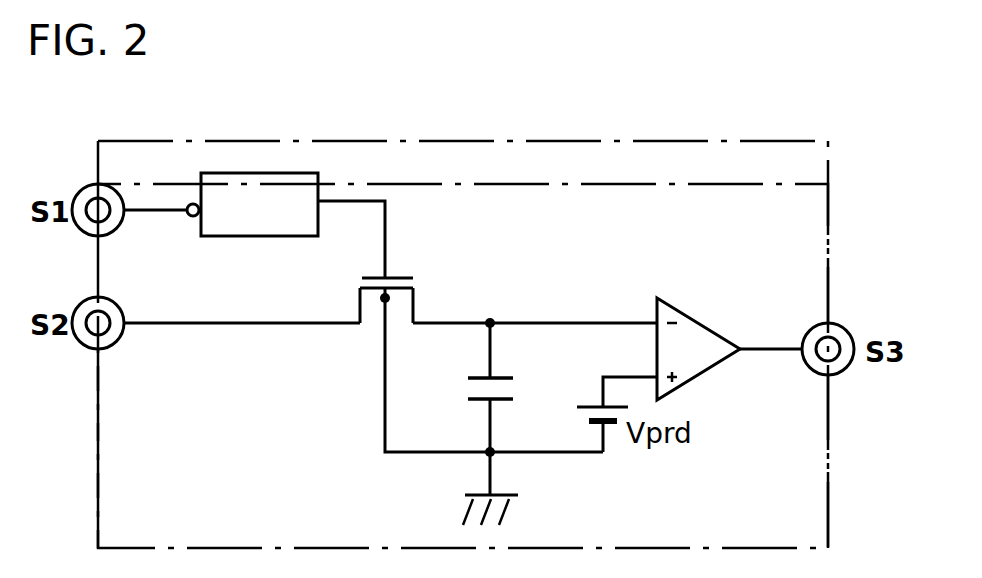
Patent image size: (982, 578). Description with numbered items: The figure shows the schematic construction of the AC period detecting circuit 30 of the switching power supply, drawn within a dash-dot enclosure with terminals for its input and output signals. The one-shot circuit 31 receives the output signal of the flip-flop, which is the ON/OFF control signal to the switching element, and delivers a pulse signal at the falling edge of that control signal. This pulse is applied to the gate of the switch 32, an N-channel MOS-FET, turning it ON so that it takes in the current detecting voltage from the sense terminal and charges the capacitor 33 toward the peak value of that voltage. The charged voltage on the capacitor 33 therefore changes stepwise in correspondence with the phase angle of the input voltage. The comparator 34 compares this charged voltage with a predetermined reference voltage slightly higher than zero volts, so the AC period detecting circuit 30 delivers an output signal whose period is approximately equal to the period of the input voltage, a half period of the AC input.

The AC period detecting circuit 30 is at (662, 173).
The one-shot circuit 31 is at (262, 237).
The switch 32 is at (425, 292).
The capacitor 33 is at (513, 392).
The comparator 34 is at (707, 328).